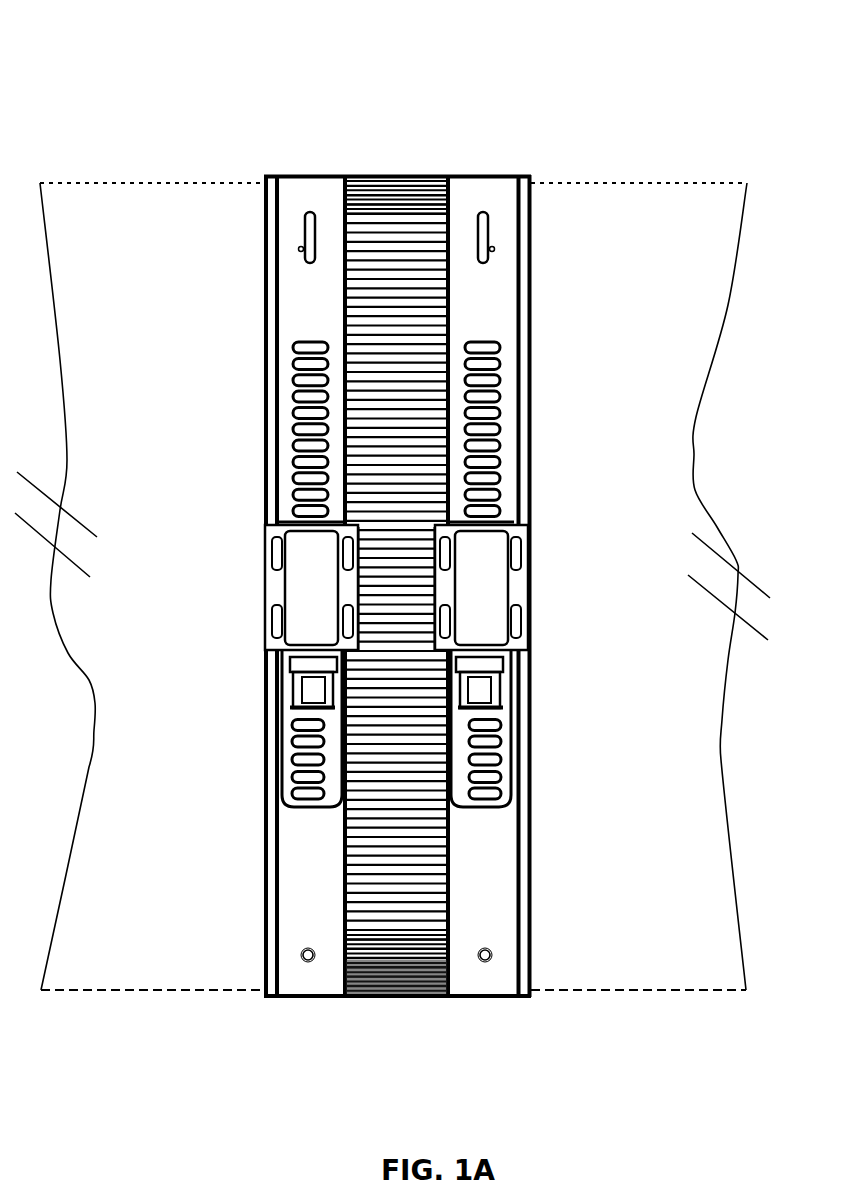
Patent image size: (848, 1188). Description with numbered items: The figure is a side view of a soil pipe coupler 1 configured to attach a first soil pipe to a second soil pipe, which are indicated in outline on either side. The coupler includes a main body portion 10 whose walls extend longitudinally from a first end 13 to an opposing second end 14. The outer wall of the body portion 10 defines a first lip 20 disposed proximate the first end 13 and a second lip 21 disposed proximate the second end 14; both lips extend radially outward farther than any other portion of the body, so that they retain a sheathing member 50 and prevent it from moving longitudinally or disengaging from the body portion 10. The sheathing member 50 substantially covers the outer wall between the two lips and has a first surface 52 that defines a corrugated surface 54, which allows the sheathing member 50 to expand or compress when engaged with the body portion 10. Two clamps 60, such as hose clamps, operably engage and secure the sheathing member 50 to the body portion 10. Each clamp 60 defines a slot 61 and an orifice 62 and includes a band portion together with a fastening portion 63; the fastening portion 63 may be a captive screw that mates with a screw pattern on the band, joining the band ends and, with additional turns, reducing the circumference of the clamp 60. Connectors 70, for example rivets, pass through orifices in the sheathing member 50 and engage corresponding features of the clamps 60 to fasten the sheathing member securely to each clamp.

The soil pipe coupler 1 is at (650, 160).
The main body portion 10 is at (537, 362).
The first end 13 is at (260, 736).
The second end 14 is at (538, 732).
The first lip 20 is at (263, 418).
The second lip 21 is at (533, 434).
The sheathing member 50 is at (414, 507).
The first surface 52 is at (423, 1000).
The corrugated surface 54 is at (429, 170).
The clamp 60 is at (298, 170).
The slot 61 is at (302, 225).
The orifice 62 is at (304, 958).
The fastening portion 63 is at (294, 580).
The connector 70 is at (299, 249).